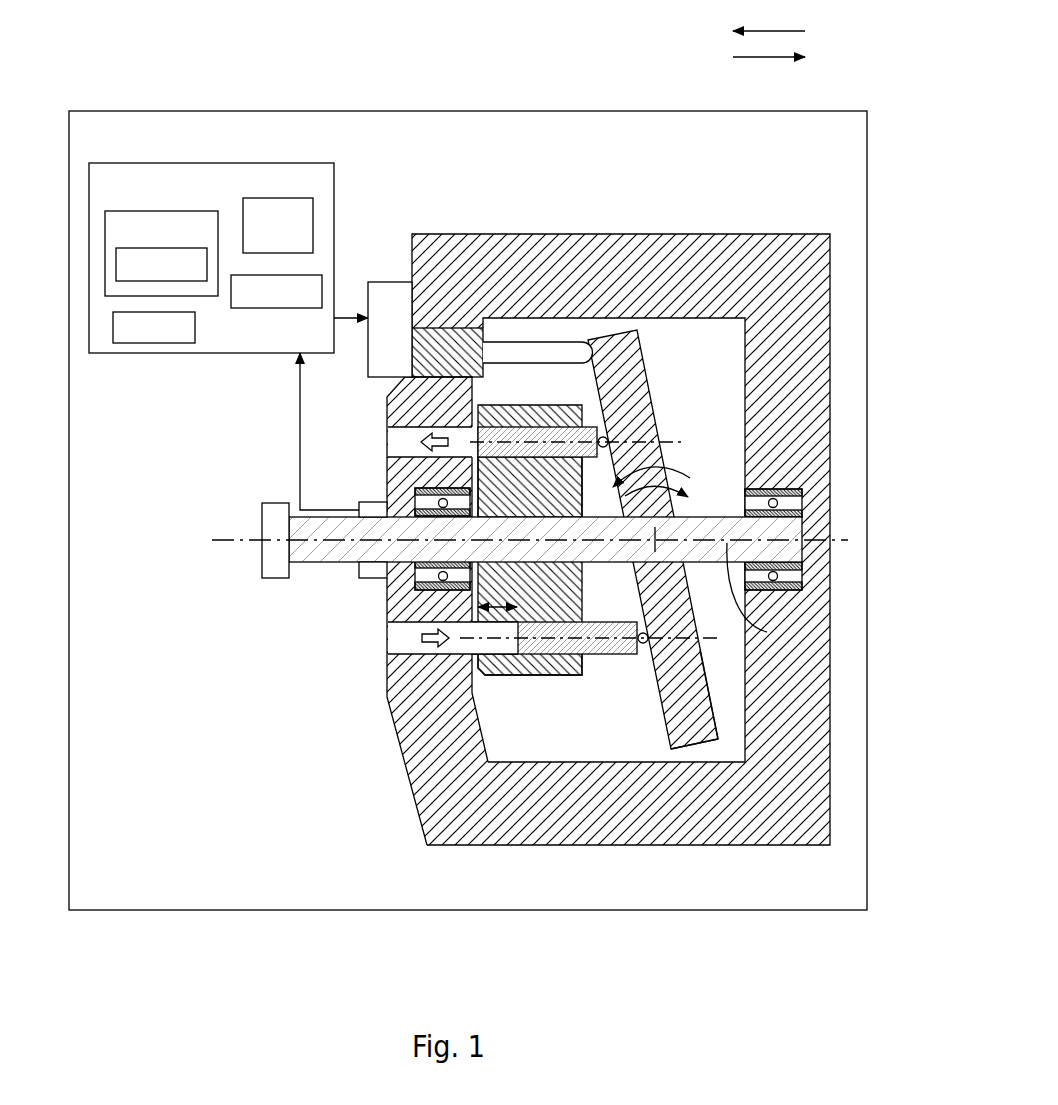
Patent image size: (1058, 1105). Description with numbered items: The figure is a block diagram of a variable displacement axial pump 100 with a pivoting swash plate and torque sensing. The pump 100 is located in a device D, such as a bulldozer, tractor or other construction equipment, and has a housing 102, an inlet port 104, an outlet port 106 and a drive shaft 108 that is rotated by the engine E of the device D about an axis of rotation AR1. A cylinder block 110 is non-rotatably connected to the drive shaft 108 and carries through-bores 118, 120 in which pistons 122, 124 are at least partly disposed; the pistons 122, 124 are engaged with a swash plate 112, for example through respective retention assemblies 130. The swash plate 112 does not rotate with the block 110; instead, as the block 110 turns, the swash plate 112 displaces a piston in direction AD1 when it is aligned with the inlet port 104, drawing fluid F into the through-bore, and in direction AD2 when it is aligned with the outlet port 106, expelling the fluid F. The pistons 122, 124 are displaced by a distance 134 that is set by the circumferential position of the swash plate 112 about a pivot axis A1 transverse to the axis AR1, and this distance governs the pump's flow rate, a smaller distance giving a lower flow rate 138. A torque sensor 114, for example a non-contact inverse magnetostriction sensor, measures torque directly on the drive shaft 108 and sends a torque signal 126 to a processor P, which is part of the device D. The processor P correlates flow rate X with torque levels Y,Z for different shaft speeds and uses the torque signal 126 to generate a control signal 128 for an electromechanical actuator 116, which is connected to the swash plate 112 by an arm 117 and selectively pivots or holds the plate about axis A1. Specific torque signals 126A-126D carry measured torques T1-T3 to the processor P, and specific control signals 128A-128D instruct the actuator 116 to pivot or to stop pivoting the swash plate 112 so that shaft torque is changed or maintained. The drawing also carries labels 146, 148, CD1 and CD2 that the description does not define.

The variable displacement axial pump 100 is at (237, 832).
The housing 102 is at (693, 234).
The inlet port 104 is at (395, 638).
The outlet port 106 is at (397, 441).
The drive shaft 108 is at (315, 553).
The cylinder block 110 is at (515, 400).
The swash plate 112 is at (621, 327).
The torque sensor 114 is at (372, 572).
The electromechanical actuator 116 is at (390, 282).
The arm 117 is at (562, 350).
The through-bore 118 is at (476, 668).
The through-bore 120 is at (542, 427).
The piston 122 is at (592, 657).
The piston 124 is at (576, 455).
The torque signal 126 is at (300, 452).
The control signal 128 is at (345, 320).
The retention assembly 130 is at (603, 447).
The distance 134 is at (498, 607).
The flow rate 138 is at (441, 411).
The swashplate first end 146 is at (667, 737).
The swashplate second end 148 is at (720, 731).
The torque signals 126A-126D is at (120, 211).
The control signals 128A-128D is at (132, 343).
The torques T1-T3 is at (197, 282).
The device D is at (280, 111).
The processor P is at (172, 163).
The flow rate X is at (313, 212).
The torque levels Y,Z is at (315, 275).
The engine E is at (278, 580).
The fluid F is at (420, 656).
The axis A1 is at (657, 540).
The axis of rotation AR1 is at (772, 599).
The first swashplate tilt direction CD1 is at (672, 498).
The second swashplate tilt direction CD2 is at (690, 472).
The direction AD1 is at (770, 57).
The direction AD2 is at (762, 31).